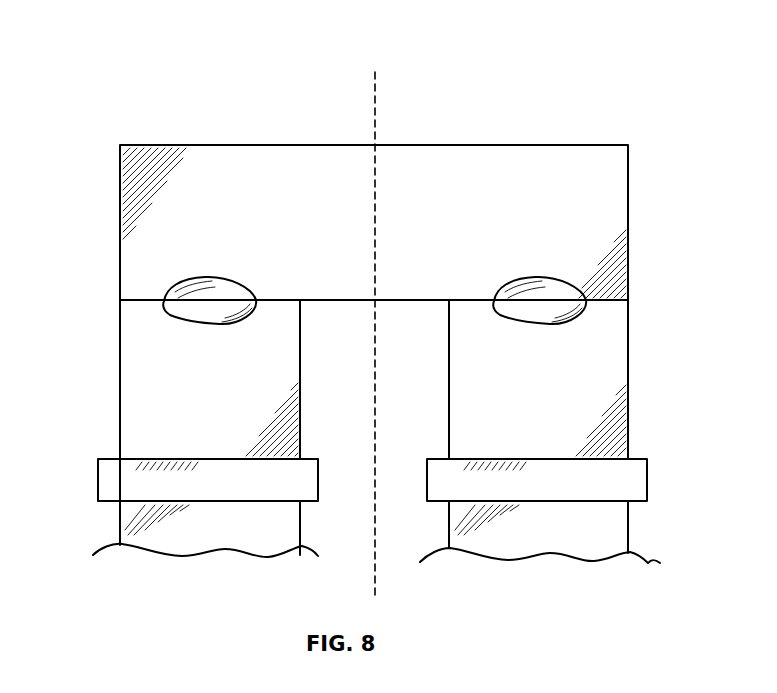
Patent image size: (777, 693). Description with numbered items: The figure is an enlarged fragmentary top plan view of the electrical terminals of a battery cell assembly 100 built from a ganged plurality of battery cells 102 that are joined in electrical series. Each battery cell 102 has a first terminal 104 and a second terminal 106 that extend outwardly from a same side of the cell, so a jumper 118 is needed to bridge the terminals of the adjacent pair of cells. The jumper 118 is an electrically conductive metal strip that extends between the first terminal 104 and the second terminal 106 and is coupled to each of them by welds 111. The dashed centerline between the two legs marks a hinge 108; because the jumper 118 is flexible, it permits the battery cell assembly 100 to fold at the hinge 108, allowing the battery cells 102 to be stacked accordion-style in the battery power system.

The battery cell assembly 100 is at (523, 102).
The battery cell 102 is at (92, 555).
The first terminal 104 is at (628, 378).
The second terminal 106 is at (120, 378).
The hinge 108 is at (382, 142).
The weld 111 is at (207, 275).
The jumper 118 is at (283, 145).